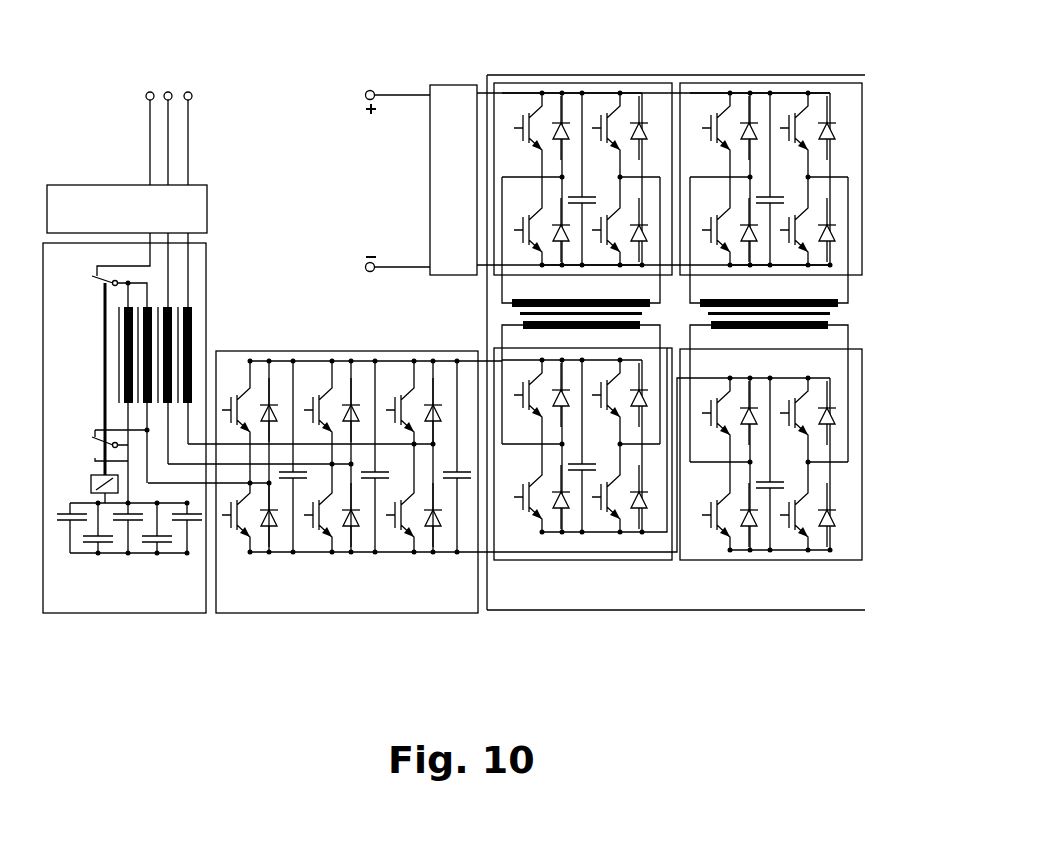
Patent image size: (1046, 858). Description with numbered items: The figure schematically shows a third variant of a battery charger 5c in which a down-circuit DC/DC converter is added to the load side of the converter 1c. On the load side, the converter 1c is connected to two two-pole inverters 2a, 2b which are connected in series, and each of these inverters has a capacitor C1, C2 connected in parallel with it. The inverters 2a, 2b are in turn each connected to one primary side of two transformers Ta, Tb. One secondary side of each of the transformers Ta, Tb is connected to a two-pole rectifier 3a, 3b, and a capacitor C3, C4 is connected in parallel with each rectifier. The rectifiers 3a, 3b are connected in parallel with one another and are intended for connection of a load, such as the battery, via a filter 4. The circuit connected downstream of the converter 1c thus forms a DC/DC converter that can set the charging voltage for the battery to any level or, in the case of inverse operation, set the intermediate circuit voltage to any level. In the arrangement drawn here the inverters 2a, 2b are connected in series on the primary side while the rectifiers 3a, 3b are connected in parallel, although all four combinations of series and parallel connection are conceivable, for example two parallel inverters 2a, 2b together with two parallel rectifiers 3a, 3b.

The battery charger 5c is at (268, 58).
The converter 1c is at (478, 620).
The filter 4 is at (455, 100).
The two-pole rectifier 3a is at (595, 100).
The two-pole rectifier 3b is at (783, 100).
The two-pole inverter 2a is at (577, 542).
The two-pole inverter 2b is at (712, 540).
The transformer Ta is at (553, 310).
The transformer Tb is at (789, 319).
The capacitor C1 is at (591, 446).
The capacitor C2 is at (777, 464).
The capacitor C3 is at (590, 179).
The capacitor C4 is at (778, 179).